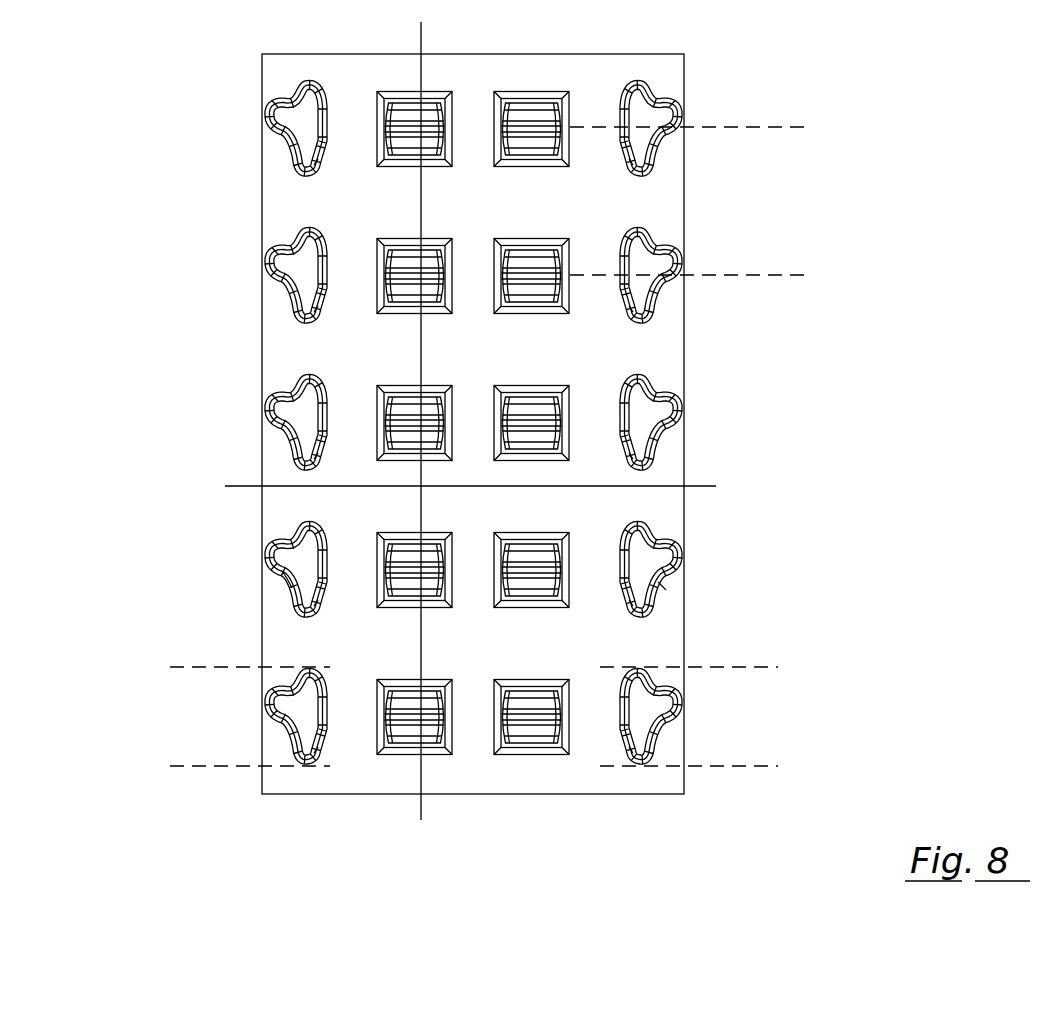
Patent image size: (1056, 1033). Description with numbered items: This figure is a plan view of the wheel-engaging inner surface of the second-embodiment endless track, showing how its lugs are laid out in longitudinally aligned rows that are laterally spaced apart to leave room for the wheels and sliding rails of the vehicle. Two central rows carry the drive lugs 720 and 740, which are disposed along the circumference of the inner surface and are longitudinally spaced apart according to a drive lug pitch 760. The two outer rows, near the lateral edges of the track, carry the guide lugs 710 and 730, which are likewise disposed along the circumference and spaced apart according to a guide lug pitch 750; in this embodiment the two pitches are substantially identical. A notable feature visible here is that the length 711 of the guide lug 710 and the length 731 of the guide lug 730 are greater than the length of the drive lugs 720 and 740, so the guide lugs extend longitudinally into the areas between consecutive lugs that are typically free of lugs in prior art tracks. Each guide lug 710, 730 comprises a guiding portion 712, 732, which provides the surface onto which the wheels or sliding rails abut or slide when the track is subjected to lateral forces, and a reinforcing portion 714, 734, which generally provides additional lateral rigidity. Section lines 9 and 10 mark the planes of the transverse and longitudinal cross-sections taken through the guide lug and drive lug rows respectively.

The guide lug 710 is at (328, 770).
The length of guide lug 711 is at (180, 640).
The guiding portion 712 is at (292, 585).
The reinforcing portion 714 is at (262, 550).
The drive lug 720 is at (445, 755).
The guide lug 730 is at (632, 735).
The length of guide lug 731 is at (766, 640).
The guiding portion 732 is at (660, 585).
The reinforcing portion 734 is at (681, 545).
The drive lug 740 is at (533, 736).
The guide lug pitch 750 is at (800, 276).
The drive lug pitch 760 is at (727, 126).
The section line 9- 9 is at (225, 486).
The section line 10- 10 is at (421, 22).